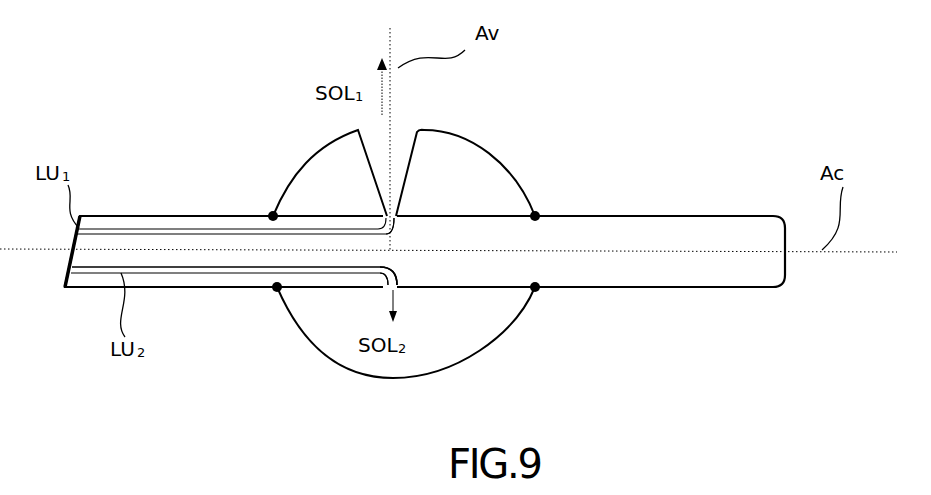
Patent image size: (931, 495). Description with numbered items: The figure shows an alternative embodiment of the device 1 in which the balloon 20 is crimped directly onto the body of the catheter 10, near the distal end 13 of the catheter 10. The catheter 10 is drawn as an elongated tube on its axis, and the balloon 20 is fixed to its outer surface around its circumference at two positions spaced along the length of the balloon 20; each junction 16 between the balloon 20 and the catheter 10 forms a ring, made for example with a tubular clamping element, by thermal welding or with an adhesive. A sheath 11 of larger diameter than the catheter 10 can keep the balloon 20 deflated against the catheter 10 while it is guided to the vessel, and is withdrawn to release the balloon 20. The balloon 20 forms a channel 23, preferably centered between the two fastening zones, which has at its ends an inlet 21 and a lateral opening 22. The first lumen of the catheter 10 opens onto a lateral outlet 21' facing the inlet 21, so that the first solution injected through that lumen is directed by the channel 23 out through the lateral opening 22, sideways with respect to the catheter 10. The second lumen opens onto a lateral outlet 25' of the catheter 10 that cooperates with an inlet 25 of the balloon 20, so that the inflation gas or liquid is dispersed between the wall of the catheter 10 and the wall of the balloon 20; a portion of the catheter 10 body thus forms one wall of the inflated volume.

The device 1 is at (150, 117).
The catheter 10 is at (697, 296).
The sheath 11 is at (303, 215).
The distal end 13 is at (776, 297).
The junction 16 is at (273, 216).
The balloon 20 is at (318, 155).
The inlet 21 is at (430, 173).
The outlet 21' is at (432, 231).
The lateral opening 22 is at (397, 135).
The channel 23 is at (400, 157).
The inlet 25 is at (414, 314).
The outlet 25' is at (433, 277).